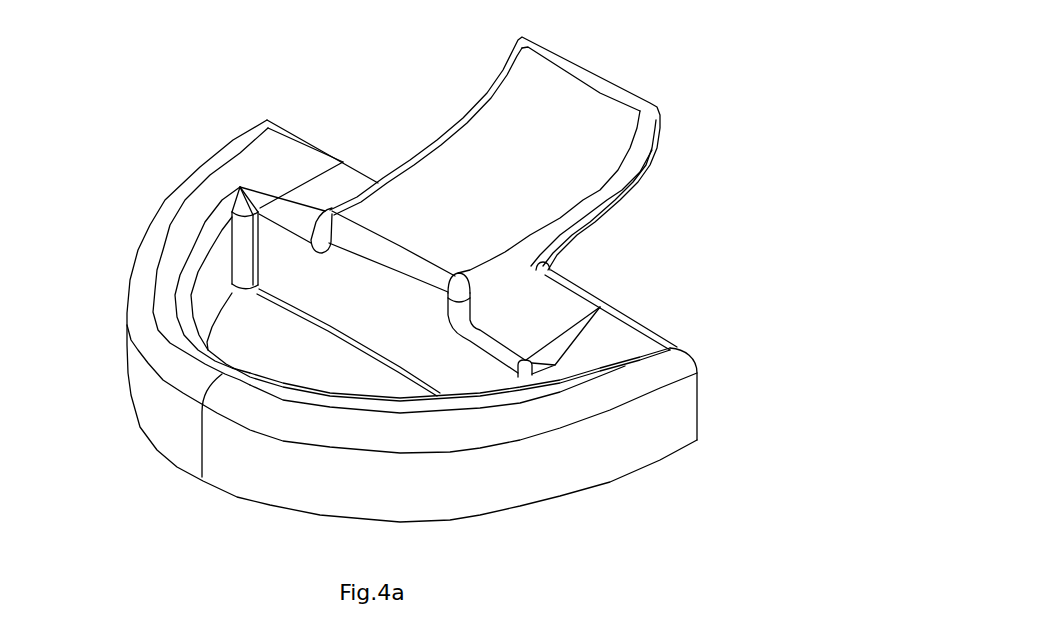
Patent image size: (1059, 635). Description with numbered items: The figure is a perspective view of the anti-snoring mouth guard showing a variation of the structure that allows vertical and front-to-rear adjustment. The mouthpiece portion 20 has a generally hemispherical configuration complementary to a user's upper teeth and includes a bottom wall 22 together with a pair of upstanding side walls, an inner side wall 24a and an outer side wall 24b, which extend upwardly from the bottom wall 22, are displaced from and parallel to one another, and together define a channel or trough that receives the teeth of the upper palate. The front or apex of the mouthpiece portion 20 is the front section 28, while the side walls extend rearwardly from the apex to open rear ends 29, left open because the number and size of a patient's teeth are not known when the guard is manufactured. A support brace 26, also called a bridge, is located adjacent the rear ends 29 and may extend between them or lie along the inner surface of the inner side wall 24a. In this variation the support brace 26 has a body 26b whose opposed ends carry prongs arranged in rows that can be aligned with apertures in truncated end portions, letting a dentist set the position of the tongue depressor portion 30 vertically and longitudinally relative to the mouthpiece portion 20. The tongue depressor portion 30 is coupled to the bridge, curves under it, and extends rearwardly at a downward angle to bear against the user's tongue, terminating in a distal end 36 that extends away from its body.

The mouthpiece portion 20 is at (165, 143).
The bottom wall 22 is at (188, 227).
The inner side wall 24a is at (213, 292).
The outer side wall 24b is at (500, 487).
The support brace 26 is at (592, 284).
The body of the support brace 26b is at (359, 303).
The front section 28 is at (187, 453).
The rear ends 29 is at (698, 412).
The tongue depressor portion 30 is at (578, 142).
The distal end 36 is at (597, 83).